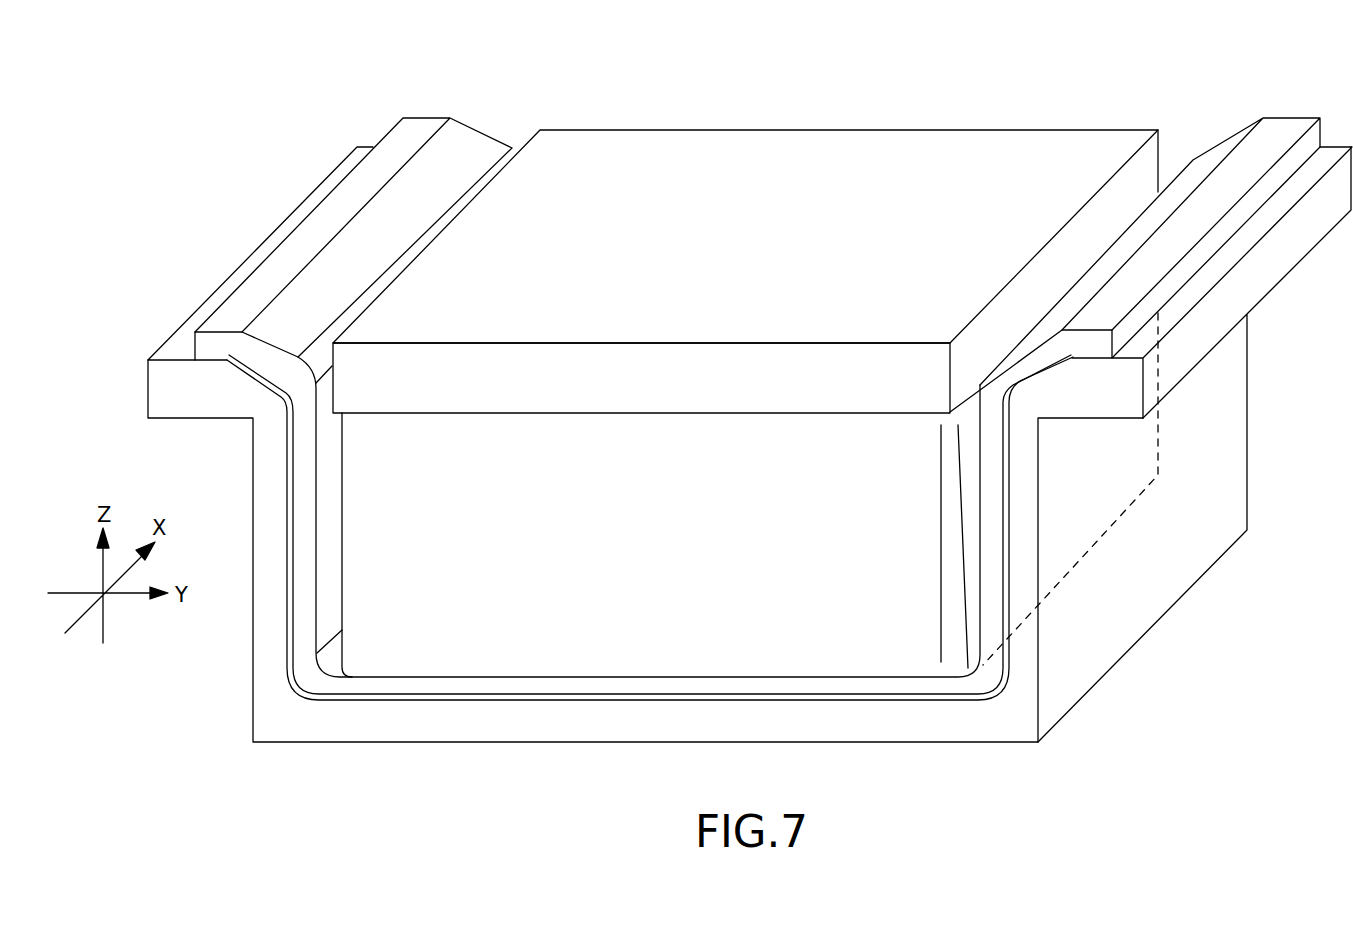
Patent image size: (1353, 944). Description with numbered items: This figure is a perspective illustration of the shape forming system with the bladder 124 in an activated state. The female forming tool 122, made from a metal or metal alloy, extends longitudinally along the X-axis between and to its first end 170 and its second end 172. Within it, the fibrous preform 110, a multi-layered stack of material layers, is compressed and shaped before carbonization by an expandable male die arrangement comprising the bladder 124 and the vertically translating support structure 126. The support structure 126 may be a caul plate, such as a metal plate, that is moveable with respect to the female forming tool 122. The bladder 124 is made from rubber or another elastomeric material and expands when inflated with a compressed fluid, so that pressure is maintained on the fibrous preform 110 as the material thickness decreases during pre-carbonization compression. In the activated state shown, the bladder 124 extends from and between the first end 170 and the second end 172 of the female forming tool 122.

The fibrous preform 110 is at (417, 137).
The female forming tool 122 is at (266, 103).
The bladder 124 is at (670, 565).
The support structure 126 is at (770, 231).
The first end 170 is at (1017, 722).
The second end 172 is at (1247, 432).